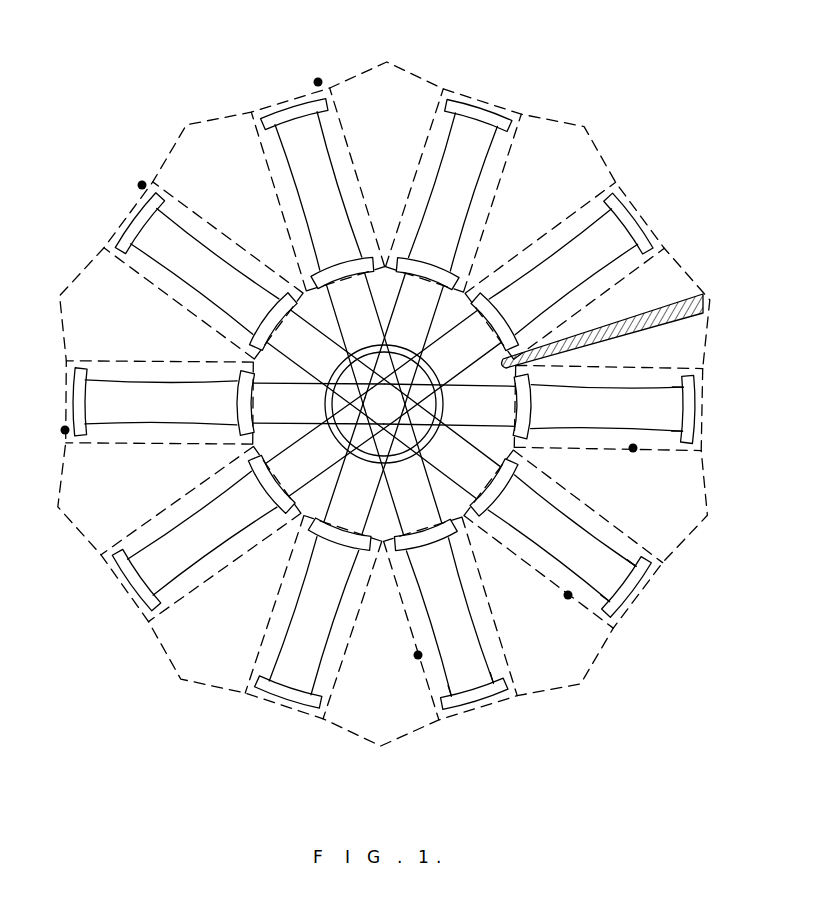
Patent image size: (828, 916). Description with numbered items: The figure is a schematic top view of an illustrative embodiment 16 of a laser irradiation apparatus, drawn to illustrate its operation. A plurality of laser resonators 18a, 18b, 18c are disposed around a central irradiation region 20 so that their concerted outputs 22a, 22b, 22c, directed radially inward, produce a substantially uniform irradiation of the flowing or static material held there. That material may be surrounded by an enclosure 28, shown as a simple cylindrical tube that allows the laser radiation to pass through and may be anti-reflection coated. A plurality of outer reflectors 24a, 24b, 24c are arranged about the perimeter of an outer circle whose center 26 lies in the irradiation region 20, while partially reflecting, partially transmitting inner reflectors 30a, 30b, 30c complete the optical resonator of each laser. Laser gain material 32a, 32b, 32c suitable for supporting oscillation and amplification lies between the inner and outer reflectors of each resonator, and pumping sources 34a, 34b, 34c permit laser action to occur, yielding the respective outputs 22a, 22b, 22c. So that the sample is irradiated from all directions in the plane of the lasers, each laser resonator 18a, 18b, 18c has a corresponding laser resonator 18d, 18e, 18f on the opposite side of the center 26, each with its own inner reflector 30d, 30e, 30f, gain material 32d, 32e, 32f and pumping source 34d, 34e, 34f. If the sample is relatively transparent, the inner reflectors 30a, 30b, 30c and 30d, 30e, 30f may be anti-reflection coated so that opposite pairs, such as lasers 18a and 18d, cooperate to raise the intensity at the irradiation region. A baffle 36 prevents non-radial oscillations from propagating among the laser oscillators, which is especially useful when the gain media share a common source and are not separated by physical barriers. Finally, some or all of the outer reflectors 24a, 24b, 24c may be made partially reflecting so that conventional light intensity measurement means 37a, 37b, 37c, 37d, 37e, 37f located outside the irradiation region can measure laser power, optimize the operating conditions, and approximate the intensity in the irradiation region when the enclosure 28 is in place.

The illustrative embodiment of the apparatus 16 is at (550, 112).
The laser resonator 18a is at (411, 633).
The laser resonator 18b is at (562, 541).
The laser resonator 18c is at (660, 362).
The laser resonator 18d is at (258, 133).
The laser resonator 18e is at (148, 283).
The laser resonator 18f is at (122, 445).
The irradiation region 20 is at (345, 390).
The output 22a is at (394, 495).
The output 22b is at (438, 470).
The output 22c is at (479, 410).
The reflector 24a is at (503, 702).
The reflector 24b is at (590, 601).
The reflector 24c is at (664, 441).
The center 26 is at (328, 432).
The enclosure 28 is at (335, 446).
The inner reflector 30a is at (400, 553).
The inner reflector 30b is at (543, 578).
The inner reflector 30c is at (530, 441).
The inner reflector 30d is at (302, 262).
The inner reflector 30e is at (250, 340).
The inner reflector 30f is at (240, 437).
The laser gain material 32a is at (437, 680).
The laser gain material 32b is at (604, 650).
The laser gain material 32c is at (702, 466).
The laser gain material 32d is at (338, 136).
The laser gain material 32e is at (148, 265).
The laser gain material 32f is at (115, 372).
The pumping source 34a is at (415, 656).
The pumping source 34b is at (568, 598).
The pumping source 34c is at (636, 452).
The pumping source 34d is at (320, 80).
The pumping source 34e is at (140, 184).
The pumping source 34f is at (64, 434).
The baffle 36 is at (666, 310).
The light intensity measurement means 37a is at (477, 722).
The light intensity measurement means 37b is at (652, 602).
The light intensity measurement means 37c is at (711, 429).
The light intensity measurement means 37d is at (288, 85).
The light intensity measurement means 37e is at (119, 208).
The light intensity measurement means 37f is at (58, 425).